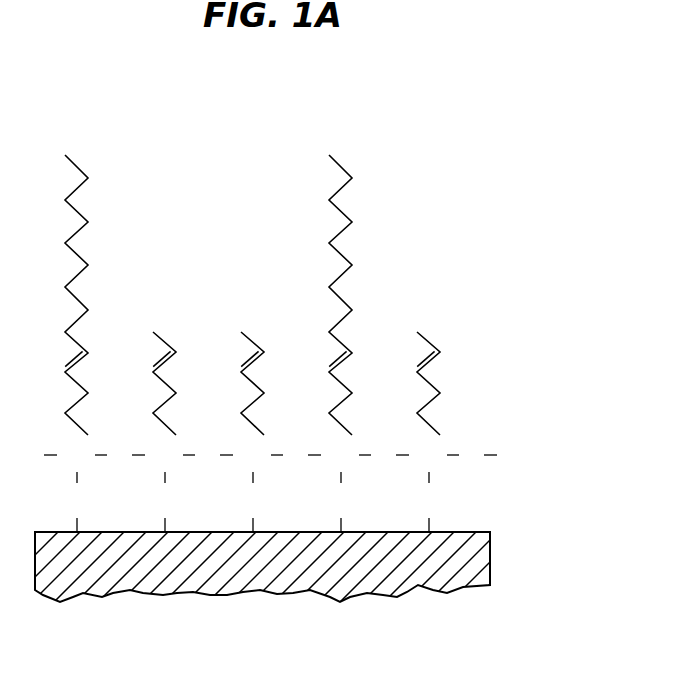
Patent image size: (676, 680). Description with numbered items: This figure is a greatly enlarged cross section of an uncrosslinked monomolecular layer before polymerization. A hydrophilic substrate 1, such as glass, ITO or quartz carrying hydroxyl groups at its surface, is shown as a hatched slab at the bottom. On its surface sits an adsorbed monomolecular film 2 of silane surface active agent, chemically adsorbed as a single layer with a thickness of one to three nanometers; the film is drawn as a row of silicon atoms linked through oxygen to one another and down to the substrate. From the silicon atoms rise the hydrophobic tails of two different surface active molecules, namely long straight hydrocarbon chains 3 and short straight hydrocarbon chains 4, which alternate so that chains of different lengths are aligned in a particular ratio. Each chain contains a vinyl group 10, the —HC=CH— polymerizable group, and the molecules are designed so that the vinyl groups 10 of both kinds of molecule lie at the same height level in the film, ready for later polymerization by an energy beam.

The hydrophilic substrate 1 is at (490, 553).
The adsorbed monomolecular film 2 is at (518, 143).
The long straight hydrocarbon chain 3 is at (331, 203).
The short straight hydrocarbon chain 4 is at (427, 403).
The vinyl group 10 is at (438, 358).